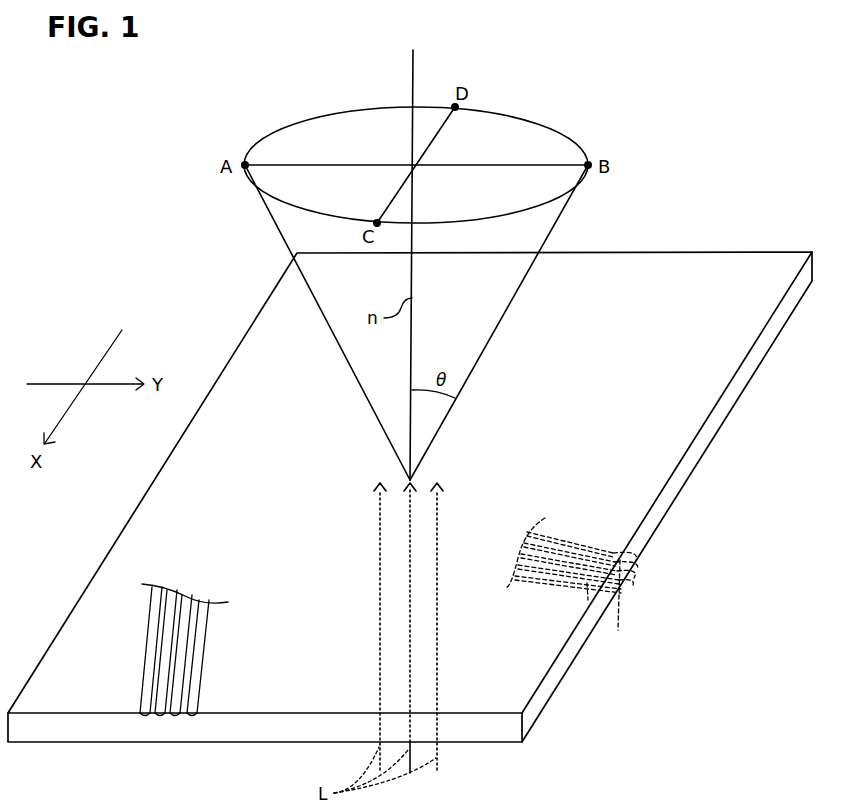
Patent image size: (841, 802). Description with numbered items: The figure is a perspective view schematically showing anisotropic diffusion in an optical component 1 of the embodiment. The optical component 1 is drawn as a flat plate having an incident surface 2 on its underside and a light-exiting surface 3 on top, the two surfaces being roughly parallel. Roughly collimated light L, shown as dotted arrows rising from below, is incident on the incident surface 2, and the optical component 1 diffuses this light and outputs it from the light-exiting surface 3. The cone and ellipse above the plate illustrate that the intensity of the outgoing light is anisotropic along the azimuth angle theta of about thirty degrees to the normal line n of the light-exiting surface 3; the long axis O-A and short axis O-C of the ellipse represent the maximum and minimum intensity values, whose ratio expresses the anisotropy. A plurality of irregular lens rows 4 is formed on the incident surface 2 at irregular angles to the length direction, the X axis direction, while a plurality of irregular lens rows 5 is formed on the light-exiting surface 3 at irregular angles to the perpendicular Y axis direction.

The optical component 1 is at (98, 268).
The incident surface 2 is at (481, 645).
The light-exiting surface 3 is at (285, 495).
The irregular lens rows 4 is at (622, 585).
The irregular lens rows 5 is at (195, 632).